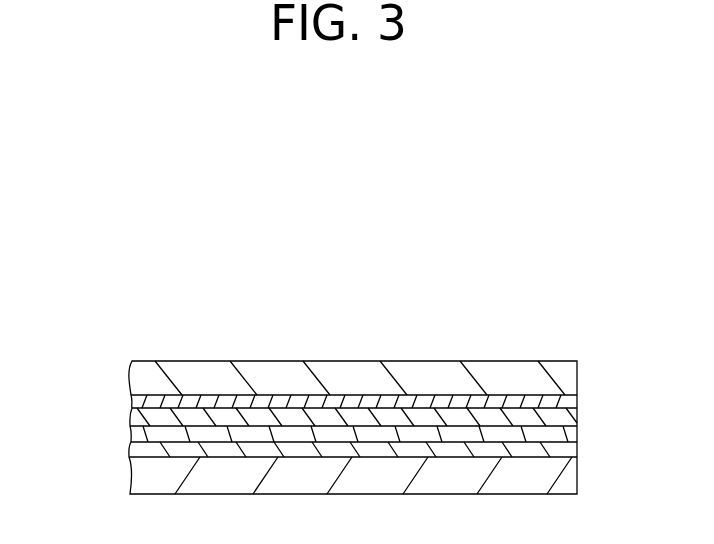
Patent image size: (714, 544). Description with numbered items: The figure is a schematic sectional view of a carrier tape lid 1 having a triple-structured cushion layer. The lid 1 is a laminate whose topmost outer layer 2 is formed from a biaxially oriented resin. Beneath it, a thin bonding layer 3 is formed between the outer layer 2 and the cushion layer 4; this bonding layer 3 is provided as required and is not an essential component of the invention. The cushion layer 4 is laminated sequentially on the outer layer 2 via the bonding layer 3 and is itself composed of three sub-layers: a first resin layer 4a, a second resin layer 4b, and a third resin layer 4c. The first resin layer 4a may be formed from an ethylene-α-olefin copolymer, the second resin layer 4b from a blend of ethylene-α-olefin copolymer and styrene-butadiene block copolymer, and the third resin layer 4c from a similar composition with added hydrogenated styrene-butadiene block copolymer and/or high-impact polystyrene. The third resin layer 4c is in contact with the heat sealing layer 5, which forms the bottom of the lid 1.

The lid 1 is at (261, 336).
The outer layer 2 is at (525, 370).
The bonding layer 3 is at (577, 398).
The cushion layer 4 is at (579, 408).
The first resin layer 4a is at (130, 415).
The second resin layer 4b is at (130, 435).
The third resin layer 4c is at (130, 448).
The heat sealing layer 5 is at (563, 480).